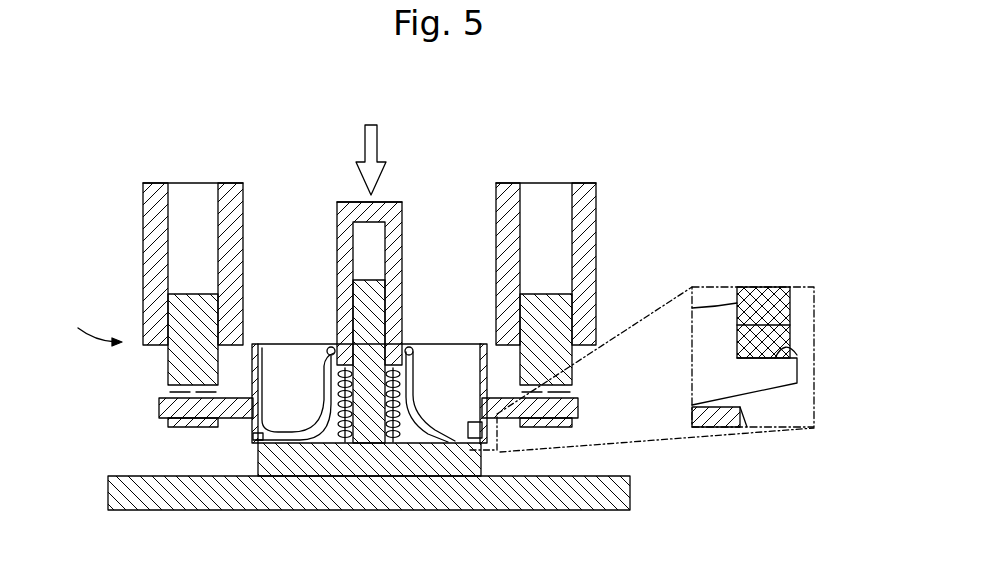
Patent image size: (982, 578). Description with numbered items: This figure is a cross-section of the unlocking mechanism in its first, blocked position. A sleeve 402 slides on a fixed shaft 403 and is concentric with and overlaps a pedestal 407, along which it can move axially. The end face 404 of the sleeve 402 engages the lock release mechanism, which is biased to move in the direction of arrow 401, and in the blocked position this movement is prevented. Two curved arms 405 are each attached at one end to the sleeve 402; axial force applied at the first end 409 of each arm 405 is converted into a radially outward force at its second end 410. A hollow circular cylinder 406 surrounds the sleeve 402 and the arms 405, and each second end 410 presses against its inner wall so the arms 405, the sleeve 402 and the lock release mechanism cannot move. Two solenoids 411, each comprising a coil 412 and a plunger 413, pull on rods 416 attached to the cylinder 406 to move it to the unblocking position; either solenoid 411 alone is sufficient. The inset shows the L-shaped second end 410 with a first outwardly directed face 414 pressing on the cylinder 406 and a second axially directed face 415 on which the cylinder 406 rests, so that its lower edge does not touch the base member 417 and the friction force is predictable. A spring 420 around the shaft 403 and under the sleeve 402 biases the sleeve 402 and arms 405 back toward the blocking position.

The arrow 401 is at (373, 143).
The sleeve 402 is at (342, 240).
The fixed shaft 403 is at (383, 297).
The end face 404 is at (354, 200).
The curved arm 405 is at (310, 413).
The hollow circular cylinder 406 is at (282, 348).
The pedestal 407 is at (285, 460).
The first end 409 is at (413, 349).
The second end 410 is at (486, 455).
The solenoid 411 is at (84, 323).
The coil 412 is at (152, 218).
The plunger 413 is at (182, 360).
The first outwardly directed face 414 is at (762, 325).
The second axially directed face 415 is at (790, 347).
The rod 416 is at (175, 407).
The base member 417 is at (157, 478).
The spring 420 is at (330, 445).